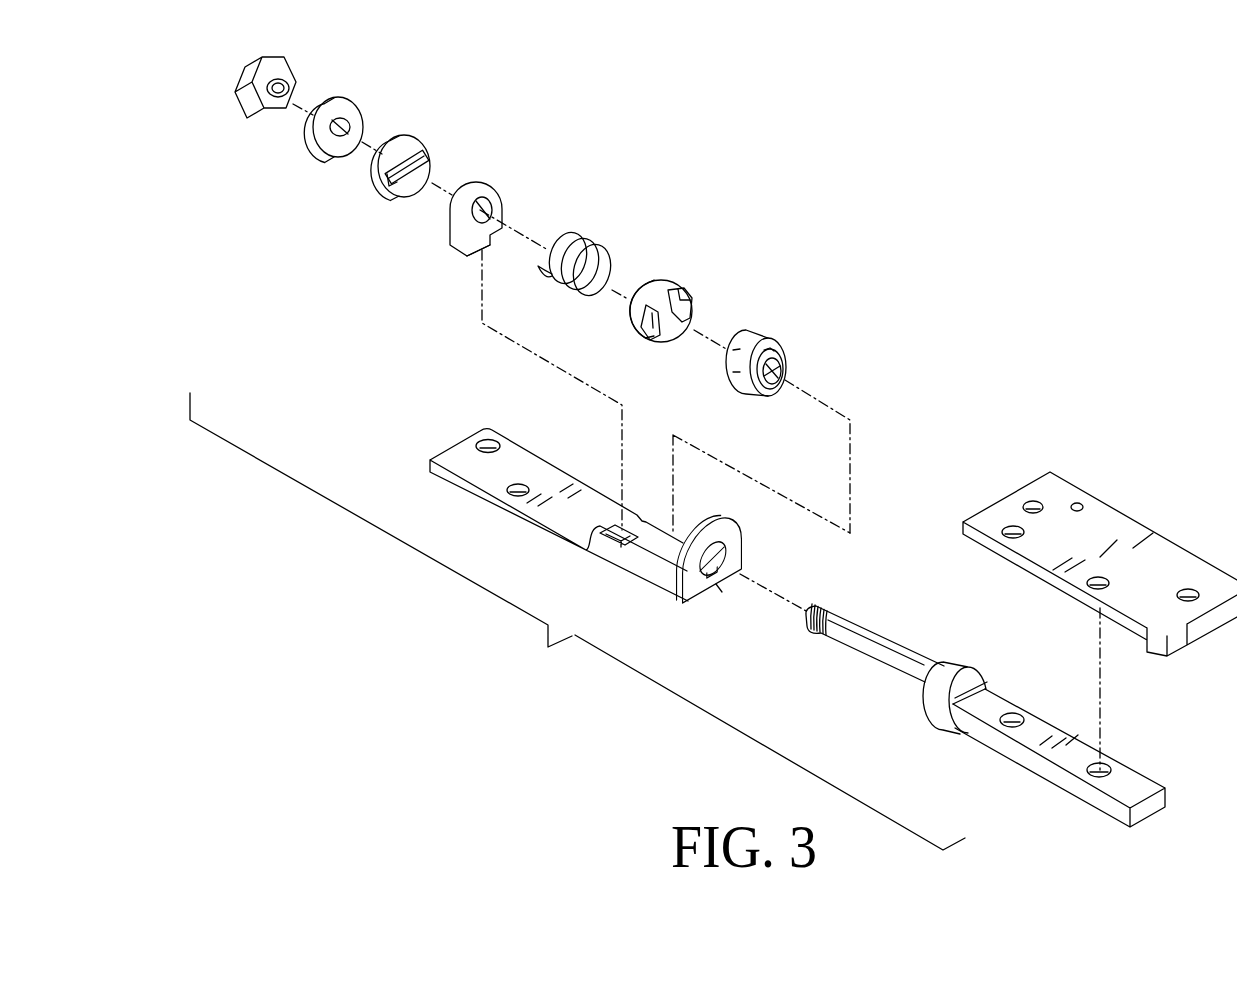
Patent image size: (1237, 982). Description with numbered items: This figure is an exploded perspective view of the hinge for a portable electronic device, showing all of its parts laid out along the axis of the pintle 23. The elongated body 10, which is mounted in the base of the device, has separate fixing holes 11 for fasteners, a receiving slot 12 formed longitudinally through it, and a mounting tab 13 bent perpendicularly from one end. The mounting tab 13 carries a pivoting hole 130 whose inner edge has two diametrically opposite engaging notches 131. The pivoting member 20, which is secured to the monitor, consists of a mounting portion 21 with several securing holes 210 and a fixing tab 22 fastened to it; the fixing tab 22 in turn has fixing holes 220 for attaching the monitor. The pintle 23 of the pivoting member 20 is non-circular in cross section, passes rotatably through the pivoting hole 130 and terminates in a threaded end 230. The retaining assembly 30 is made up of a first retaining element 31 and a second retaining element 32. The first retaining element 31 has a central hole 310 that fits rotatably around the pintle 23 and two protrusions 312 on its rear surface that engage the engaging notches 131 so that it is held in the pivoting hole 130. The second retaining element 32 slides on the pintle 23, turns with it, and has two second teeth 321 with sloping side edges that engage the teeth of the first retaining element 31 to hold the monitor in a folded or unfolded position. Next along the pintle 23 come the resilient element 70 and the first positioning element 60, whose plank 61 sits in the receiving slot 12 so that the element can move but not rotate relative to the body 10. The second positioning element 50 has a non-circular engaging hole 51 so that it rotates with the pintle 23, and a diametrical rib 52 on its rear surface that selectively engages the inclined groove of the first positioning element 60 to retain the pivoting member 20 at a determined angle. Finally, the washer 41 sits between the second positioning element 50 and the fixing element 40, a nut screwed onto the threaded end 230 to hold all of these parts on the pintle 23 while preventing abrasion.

The body 10 is at (621, 533).
The fixing holes 11 is at (487, 446).
The receiving slot 12 is at (590, 530).
The mounting tab 13 is at (697, 581).
The pivoting hole 130 is at (723, 548).
The engaging notches 131 is at (723, 582).
The pivoting member 20 is at (937, 719).
The mounting portion 21 is at (1086, 752).
The securing holes 210 is at (1018, 722).
The fixing tab 22 is at (1090, 558).
The fixing holes 220 is at (1030, 503).
The pintle 23 is at (843, 649).
The threaded end 230 is at (815, 633).
The retaining assembly 30 is at (734, 302).
The first retaining element 31 is at (808, 353).
The central hole 310 is at (780, 372).
The protrusions 312 is at (771, 358).
The second retaining element 32 is at (671, 306).
The second teeth 321 is at (690, 312).
The fixing element 40 is at (245, 106).
The washer 41 is at (338, 107).
The second positioning element 50 is at (402, 164).
The engaging hole 51 is at (412, 172).
The rib 52 is at (390, 184).
The first positioning element 60 is at (476, 229).
The plank 61 is at (475, 254).
The resilient element 70 is at (585, 252).